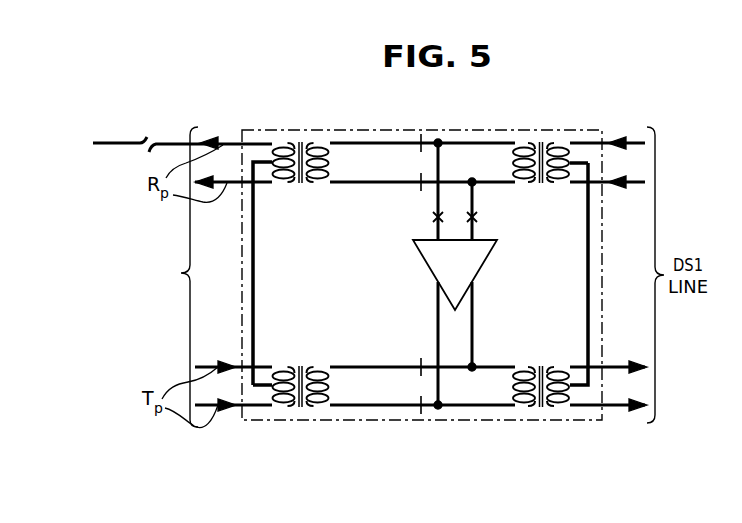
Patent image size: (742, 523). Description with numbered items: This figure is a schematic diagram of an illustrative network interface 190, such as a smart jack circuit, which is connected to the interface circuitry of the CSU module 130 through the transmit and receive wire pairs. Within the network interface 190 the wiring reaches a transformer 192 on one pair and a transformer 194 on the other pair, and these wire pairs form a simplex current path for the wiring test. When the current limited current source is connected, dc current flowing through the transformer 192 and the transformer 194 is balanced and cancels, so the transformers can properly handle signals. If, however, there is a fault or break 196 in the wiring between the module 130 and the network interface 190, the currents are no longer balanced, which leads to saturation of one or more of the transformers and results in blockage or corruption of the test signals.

The network interface 190 is at (430, 130).
The transformer 192 is at (301, 141).
The transformer 194 is at (301, 408).
The break 196 is at (157, 139).
The CSU module 130 is at (142, 277).